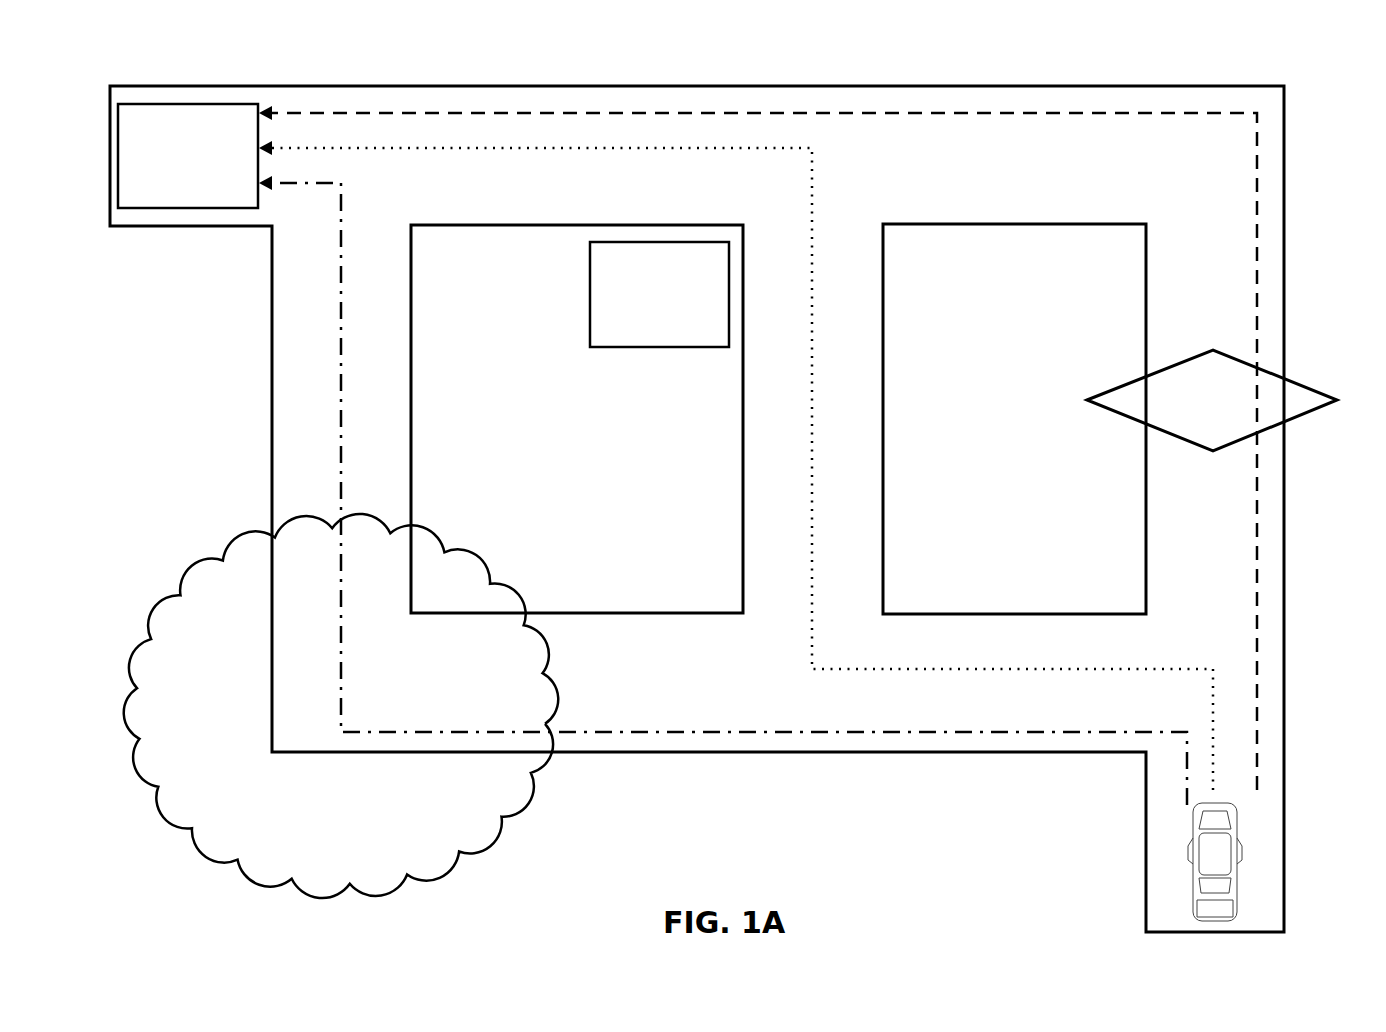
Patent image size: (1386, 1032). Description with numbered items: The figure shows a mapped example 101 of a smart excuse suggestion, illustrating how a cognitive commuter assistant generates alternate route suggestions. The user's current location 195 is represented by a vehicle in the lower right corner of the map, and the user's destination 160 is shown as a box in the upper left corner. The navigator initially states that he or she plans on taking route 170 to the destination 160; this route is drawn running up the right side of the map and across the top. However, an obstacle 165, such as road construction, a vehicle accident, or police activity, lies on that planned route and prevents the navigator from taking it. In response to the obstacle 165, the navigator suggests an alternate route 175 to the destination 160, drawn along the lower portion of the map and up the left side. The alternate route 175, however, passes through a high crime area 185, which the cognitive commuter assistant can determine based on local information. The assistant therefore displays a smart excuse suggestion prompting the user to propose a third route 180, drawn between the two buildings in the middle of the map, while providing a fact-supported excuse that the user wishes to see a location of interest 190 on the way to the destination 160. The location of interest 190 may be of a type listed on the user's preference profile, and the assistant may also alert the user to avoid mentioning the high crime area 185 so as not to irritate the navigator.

The mapped example 101 is at (556, 62).
The destination 160 is at (188, 156).
The obstacle 165 is at (1212, 400).
The route 170 is at (1257, 250).
The alternate route 175 is at (620, 731).
The third route 180 is at (812, 380).
The high crime area 185 is at (341, 706).
The location of interest 190 is at (659, 294).
The user's current location 195 is at (1238, 863).